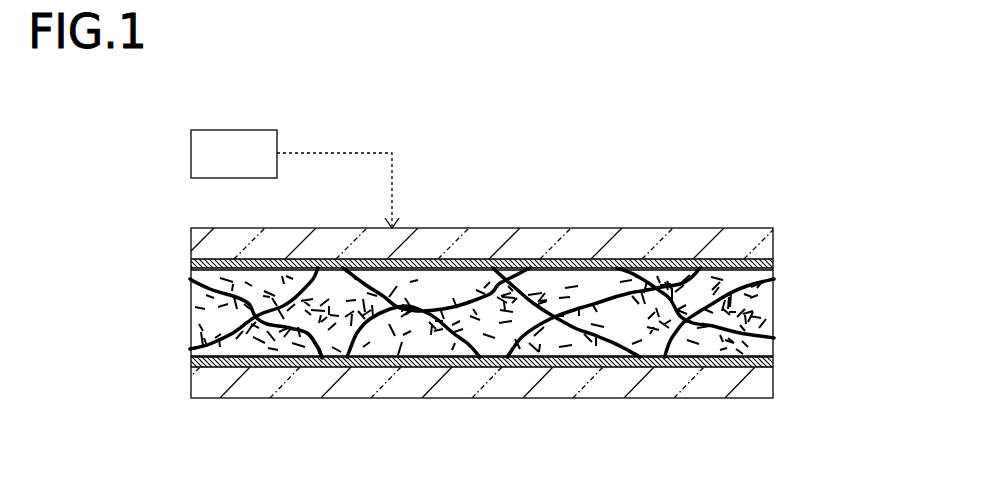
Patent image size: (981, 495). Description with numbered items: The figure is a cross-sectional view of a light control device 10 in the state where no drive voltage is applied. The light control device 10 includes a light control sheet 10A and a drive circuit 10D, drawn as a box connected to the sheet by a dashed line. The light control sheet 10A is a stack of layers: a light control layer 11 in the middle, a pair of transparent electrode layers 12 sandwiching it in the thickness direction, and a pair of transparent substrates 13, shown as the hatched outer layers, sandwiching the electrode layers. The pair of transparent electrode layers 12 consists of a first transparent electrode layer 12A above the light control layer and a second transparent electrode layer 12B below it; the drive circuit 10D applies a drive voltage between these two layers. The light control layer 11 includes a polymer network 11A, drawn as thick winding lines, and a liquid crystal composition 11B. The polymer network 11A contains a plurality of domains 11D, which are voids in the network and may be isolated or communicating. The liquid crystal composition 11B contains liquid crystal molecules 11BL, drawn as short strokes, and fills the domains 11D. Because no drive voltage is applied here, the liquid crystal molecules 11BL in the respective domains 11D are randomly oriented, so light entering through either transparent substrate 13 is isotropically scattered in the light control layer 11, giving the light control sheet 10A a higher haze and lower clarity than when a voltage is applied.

The light control device 10 is at (832, 75).
The light control sheet 10A is at (847, 218).
The drive circuit 10D is at (191, 153).
The light control layer 11 is at (191, 325).
The polymer network 11A is at (305, 268).
The liquid crystal composition 11B is at (528, 350).
The liquid crystal molecules 11BL is at (625, 270).
The domains 11D is at (310, 343).
The pair of transparent electrode layers 12 is at (545, 308).
The first transparent electrode layer 12A is at (773, 262).
The second transparent electrode layer 12B is at (773, 363).
The pair of transparent substrates 13 is at (191, 240).